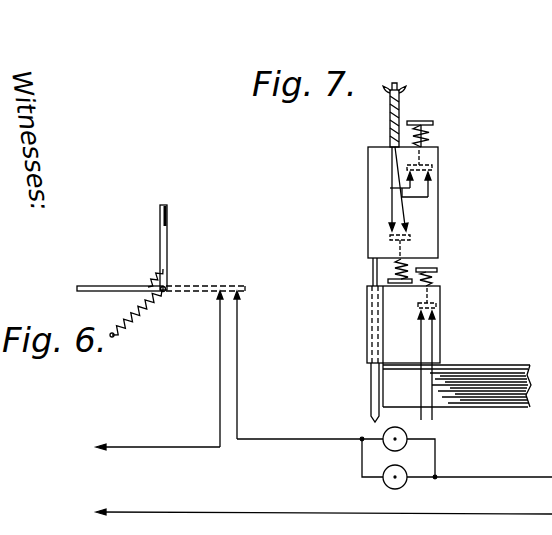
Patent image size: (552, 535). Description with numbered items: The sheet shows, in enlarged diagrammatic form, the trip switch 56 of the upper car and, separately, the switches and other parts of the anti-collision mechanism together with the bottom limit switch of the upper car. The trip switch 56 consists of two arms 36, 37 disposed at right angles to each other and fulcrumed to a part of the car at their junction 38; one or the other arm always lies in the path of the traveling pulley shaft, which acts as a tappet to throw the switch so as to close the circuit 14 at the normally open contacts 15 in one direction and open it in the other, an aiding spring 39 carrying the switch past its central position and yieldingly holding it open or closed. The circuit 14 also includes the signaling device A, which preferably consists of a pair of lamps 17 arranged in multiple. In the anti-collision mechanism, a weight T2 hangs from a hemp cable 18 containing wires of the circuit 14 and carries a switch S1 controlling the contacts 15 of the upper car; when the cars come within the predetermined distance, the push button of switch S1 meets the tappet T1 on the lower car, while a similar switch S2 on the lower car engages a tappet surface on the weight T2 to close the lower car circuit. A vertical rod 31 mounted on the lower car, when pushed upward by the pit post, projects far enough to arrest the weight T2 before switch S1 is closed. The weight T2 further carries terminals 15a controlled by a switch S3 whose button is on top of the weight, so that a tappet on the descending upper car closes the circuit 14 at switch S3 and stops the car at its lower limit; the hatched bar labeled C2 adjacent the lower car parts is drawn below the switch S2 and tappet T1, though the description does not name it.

In FIG. 6, the arm 36 is at (169, 217).
In FIG. 6, the arm 37 is at (100, 288).
In FIG. 6, the junction 38 is at (170, 287).
In FIG. 6, the aiding spring 39 is at (128, 305).
In FIG. 6, the trip switch 56 is at (165, 272).
In FIG. 6, the contacts 15 is at (220, 295).
In FIG. 7, the contacts 15 is at (390, 226).
In FIG. 6, the circuit 14 is at (323, 479).
In FIG. 7, the circuit 14 is at (392, 88).
In FIG. 7, the cable 18 is at (390, 122).
In FIG. 7, the switch S3 is at (434, 122).
In FIG. 7, the terminals 15a is at (433, 175).
In FIG. 7, the weight T2 is at (425, 257).
In FIG. 7, the vertical rod 31 is at (371, 266).
In FIG. 7, the switch S1 is at (388, 280).
In FIG. 7, the switch S2 is at (438, 274).
In FIG. 7, the tappet T1 is at (395, 288).
In FIG. 7, the contact bar C2 is at (468, 392).
In FIG. 7, the lamps 17 is at (405, 437).
In FIG. 7, the signaling device A is at (444, 458).